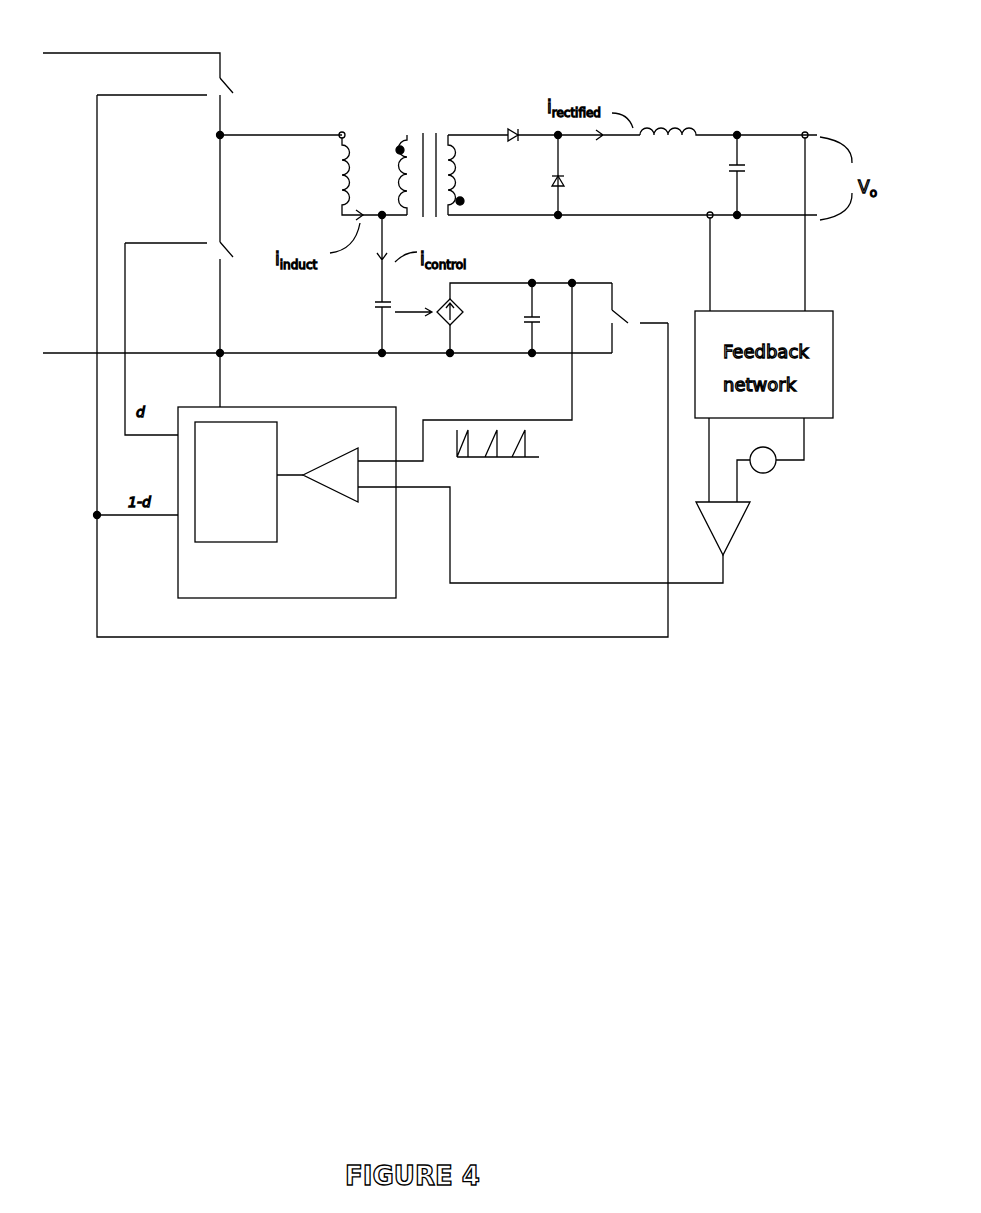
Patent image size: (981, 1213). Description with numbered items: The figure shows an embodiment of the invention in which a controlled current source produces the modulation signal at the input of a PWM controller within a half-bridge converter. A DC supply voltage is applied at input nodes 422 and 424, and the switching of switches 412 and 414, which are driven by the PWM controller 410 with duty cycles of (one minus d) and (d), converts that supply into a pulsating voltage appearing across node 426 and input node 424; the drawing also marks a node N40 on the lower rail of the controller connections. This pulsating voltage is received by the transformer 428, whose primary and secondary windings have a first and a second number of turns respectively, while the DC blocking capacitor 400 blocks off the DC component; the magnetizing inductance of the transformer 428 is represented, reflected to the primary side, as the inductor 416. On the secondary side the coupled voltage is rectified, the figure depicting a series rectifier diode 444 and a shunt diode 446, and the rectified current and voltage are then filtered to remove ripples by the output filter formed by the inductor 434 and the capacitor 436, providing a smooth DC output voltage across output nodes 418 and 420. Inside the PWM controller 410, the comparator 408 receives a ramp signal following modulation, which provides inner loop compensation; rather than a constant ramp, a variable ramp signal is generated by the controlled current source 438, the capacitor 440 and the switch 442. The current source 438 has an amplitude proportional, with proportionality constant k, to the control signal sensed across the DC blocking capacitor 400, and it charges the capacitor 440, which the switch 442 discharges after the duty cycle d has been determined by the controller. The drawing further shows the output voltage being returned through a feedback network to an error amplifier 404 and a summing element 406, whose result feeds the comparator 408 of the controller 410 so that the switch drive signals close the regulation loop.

The DC blocking capacitor 400 is at (373, 307).
The error amplifier 404 is at (735, 543).
The summing node 406 is at (767, 473).
The comparator 408 is at (367, 443).
The PWM controller 410 is at (275, 589).
The switch 412 is at (227, 82).
The switch 414 is at (233, 243).
The inductor 416 is at (340, 170).
The output node 418 is at (775, 125).
The output node 420 is at (788, 217).
The input node 422 is at (118, 53).
The input node 424 is at (207, 350).
The node 426 is at (222, 122).
The transformer 428 is at (442, 132).
The inductor 434 is at (668, 123).
The capacitor 436 is at (735, 175).
The controlled current source 438 is at (467, 302).
The capacitor 440 is at (523, 313).
The switch 442 is at (627, 312).
The rectifier diode 444 is at (525, 123).
The freewheeling diode 446 is at (547, 173).
The node N40 is at (93, 491).